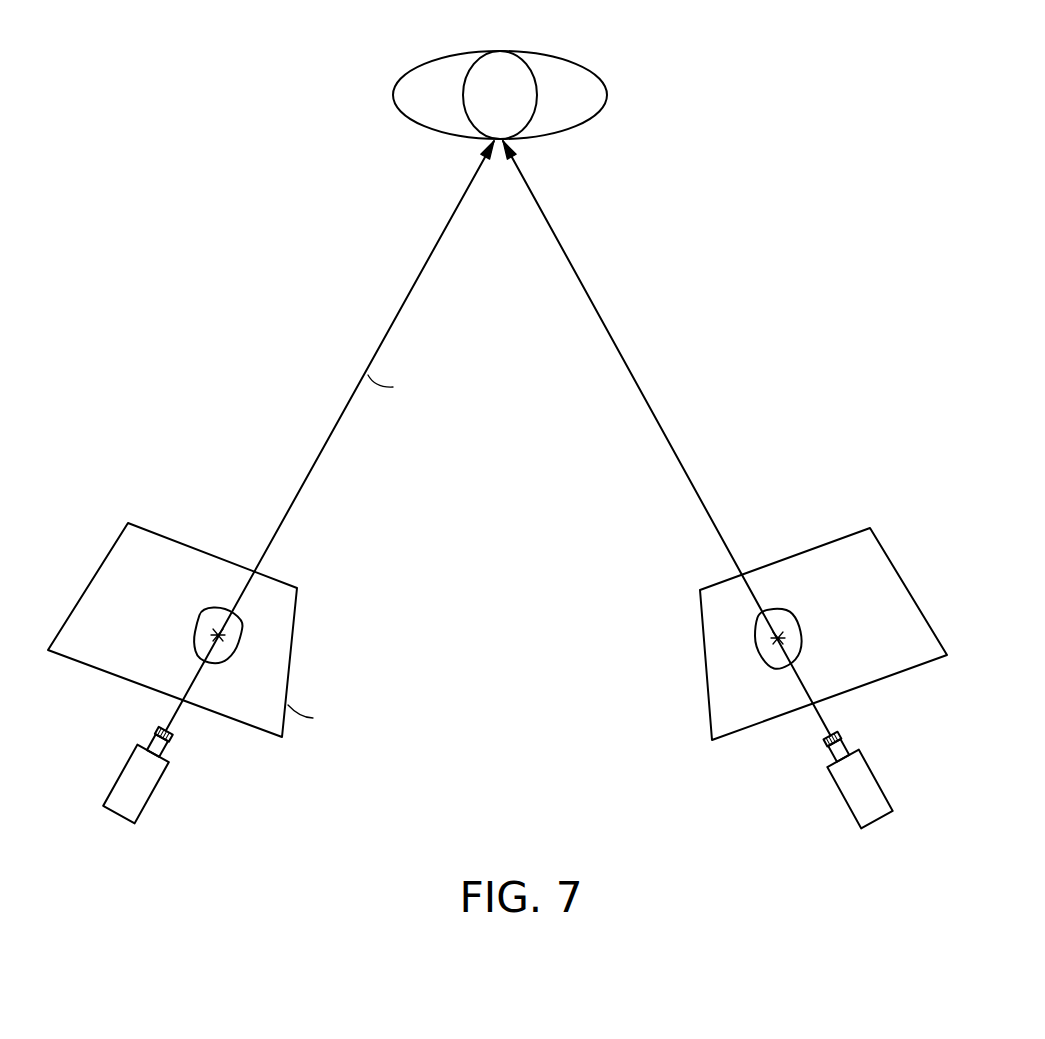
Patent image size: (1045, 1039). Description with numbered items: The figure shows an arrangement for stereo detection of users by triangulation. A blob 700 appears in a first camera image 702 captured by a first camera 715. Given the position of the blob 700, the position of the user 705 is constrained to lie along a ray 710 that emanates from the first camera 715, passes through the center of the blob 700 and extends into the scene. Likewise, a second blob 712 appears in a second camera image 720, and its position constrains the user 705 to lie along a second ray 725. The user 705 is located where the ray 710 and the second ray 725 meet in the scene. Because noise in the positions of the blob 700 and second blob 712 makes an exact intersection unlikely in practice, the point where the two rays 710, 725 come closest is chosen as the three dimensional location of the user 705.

The blob 700 is at (232, 610).
The first camera image 702 is at (140, 527).
The user 705 is at (590, 75).
The ray 710 is at (332, 435).
The second blob 712 is at (758, 648).
The first camera 715 is at (118, 778).
The second camera image 720 is at (892, 557).
The second ray 725 is at (612, 332).